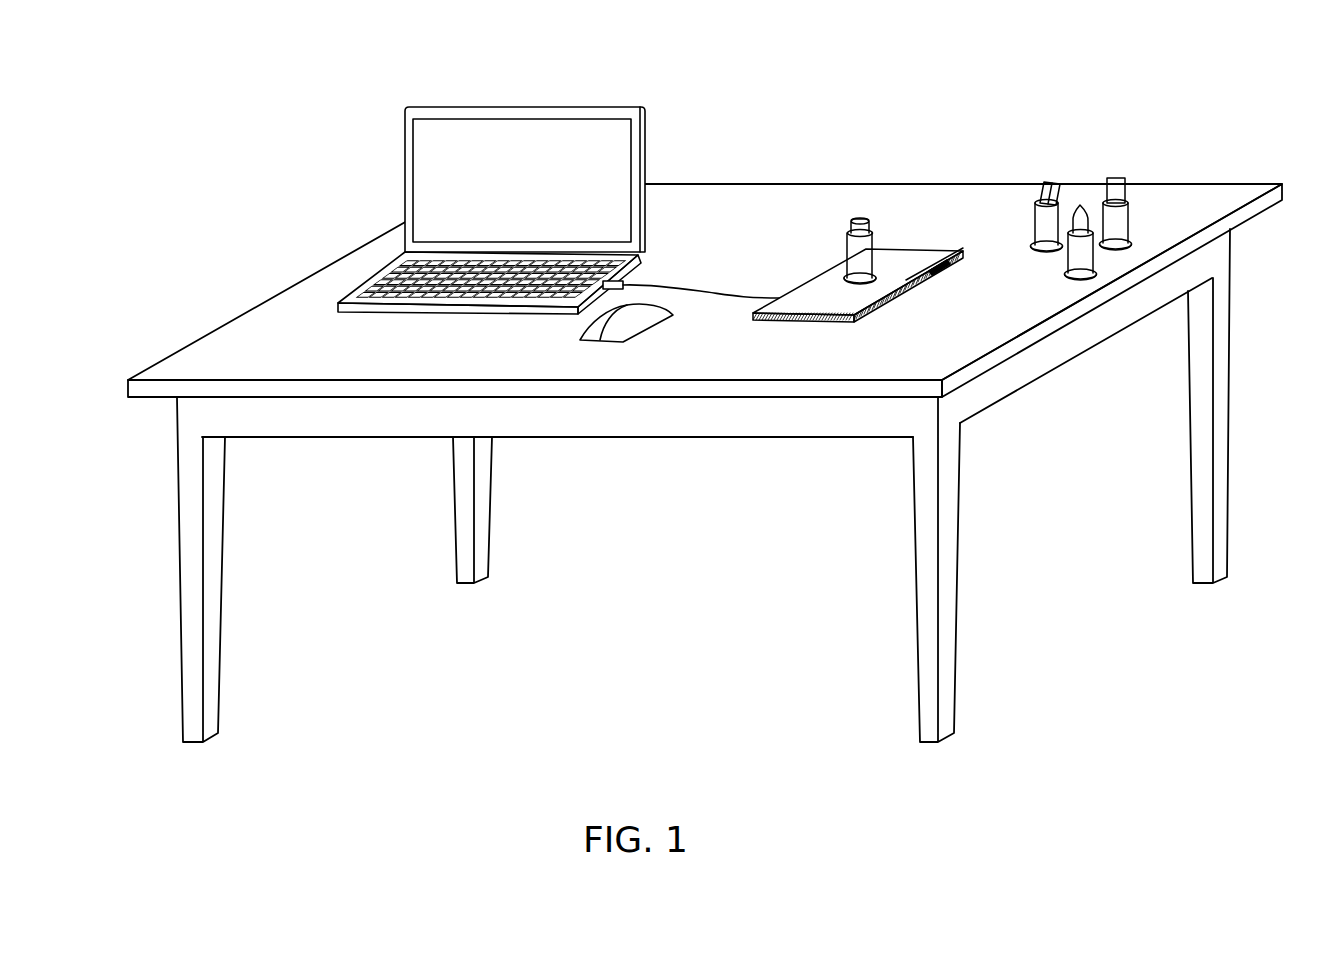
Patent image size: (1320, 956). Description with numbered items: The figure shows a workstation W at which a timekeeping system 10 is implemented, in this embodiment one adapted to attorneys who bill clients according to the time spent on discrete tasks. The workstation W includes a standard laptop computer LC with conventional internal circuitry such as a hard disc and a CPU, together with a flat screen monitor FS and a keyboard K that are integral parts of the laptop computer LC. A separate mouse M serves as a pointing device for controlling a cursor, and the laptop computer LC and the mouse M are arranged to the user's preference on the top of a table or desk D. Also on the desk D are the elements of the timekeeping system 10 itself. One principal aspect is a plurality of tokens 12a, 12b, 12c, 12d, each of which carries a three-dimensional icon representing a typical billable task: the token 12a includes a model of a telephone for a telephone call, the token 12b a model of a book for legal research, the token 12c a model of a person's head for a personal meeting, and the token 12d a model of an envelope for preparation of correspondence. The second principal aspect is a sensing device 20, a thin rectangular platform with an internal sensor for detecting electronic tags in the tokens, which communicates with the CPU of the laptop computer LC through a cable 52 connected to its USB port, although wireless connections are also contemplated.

The timekeeping system 10 is at (705, 394).
The token 12a is at (858, 247).
The token 12b is at (1043, 225).
The token 12c is at (1073, 258).
The token 12d is at (1118, 220).
The sensing device 20 is at (918, 278).
The cable 52 is at (713, 290).
The desk D is at (705, 435).
The workstation W is at (305, 287).
The laptop computer LC is at (471, 203).
The flat screen monitor FS is at (547, 132).
The keyboard K is at (393, 287).
The mouse M is at (632, 323).